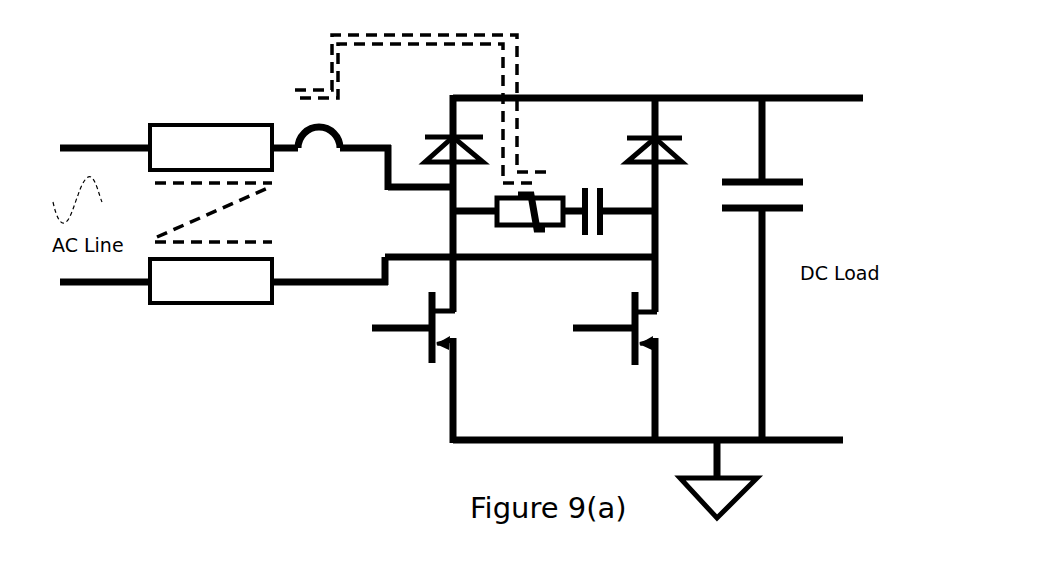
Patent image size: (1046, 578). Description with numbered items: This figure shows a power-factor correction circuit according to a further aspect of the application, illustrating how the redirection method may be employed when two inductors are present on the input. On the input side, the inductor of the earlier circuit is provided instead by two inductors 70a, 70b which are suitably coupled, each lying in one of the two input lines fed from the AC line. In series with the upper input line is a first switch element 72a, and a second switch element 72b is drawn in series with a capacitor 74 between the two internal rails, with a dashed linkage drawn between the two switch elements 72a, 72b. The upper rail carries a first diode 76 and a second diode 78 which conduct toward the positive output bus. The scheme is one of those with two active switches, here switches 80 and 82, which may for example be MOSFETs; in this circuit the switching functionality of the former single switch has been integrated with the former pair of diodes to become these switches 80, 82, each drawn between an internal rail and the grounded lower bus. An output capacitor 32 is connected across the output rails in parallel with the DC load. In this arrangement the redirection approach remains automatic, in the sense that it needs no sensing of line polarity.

The inductor 70a is at (152, 122).
The inductor 70b is at (270, 305).
The first switch (relay contact) 72a is at (318, 153).
The second switch (relay contact) 72b is at (530, 189).
The capacitor 74 is at (585, 187).
The first diode 76 is at (412, 125).
The second diode 78 is at (675, 132).
The switch 80 is at (410, 345).
The switch 82 is at (612, 342).
The output capacitor 32 is at (732, 215).